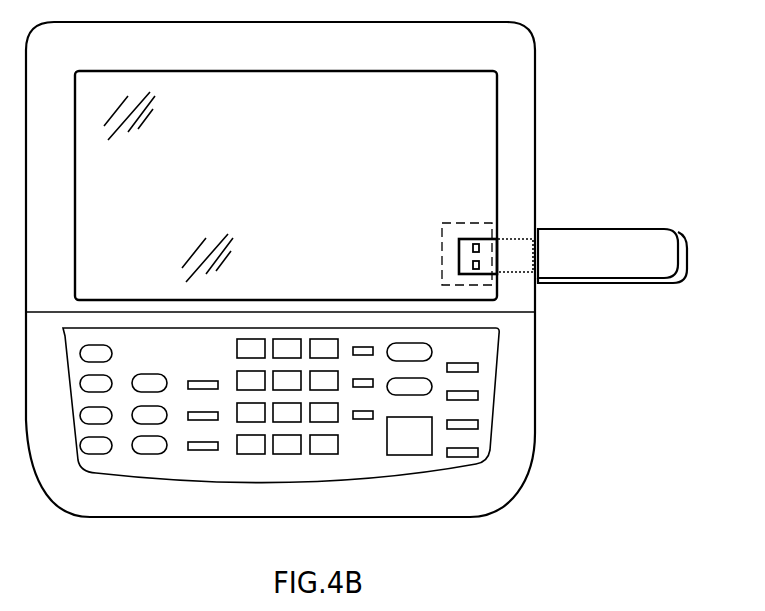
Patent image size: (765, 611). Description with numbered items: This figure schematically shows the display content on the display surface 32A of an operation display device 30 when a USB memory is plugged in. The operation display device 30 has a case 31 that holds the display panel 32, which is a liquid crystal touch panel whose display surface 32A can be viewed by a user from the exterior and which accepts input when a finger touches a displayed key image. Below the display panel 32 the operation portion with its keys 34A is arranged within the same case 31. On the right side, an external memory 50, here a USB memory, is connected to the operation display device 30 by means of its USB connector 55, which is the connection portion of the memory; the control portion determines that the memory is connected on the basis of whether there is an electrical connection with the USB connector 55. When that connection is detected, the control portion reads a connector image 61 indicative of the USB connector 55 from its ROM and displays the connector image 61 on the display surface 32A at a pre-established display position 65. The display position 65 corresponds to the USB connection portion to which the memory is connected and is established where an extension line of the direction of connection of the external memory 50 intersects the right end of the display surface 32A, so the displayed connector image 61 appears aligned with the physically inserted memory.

The operation display device 30 is at (356, 293).
The case 31 is at (536, 57).
The display panel 32 is at (480, 116).
The display surface 32A is at (226, 115).
The operation panel 34A is at (186, 361).
The external memory 50 is at (629, 229).
The USB connector 55 is at (521, 239).
The connector image 61 is at (474, 238).
The display position 65 is at (444, 223).